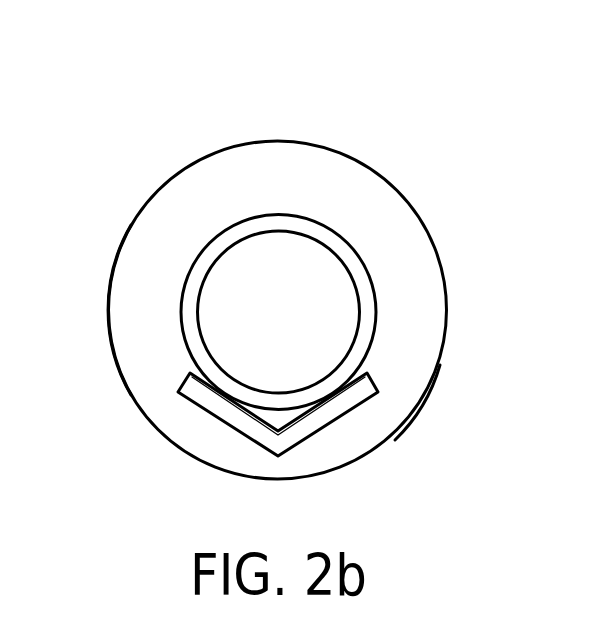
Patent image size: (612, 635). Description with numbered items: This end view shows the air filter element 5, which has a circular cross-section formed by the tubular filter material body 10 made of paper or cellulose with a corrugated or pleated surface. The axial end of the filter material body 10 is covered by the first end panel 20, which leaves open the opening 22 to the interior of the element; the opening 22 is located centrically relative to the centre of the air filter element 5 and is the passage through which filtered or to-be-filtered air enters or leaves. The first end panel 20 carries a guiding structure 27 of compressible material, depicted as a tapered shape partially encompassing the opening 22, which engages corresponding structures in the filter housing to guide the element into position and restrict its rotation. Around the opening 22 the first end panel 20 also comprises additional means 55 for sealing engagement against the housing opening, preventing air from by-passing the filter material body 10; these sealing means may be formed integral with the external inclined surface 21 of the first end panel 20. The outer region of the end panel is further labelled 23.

The air filter element 5 is at (398, 114).
The filter material body 10 is at (277, 142).
The first end panel 20 is at (203, 197).
The external inclined surface 21 is at (152, 267).
The opening 22 is at (282, 318).
The outer surface 23 is at (425, 400).
The guiding structure 27 is at (345, 415).
The additional means for a sealing engagement 55 is at (362, 333).